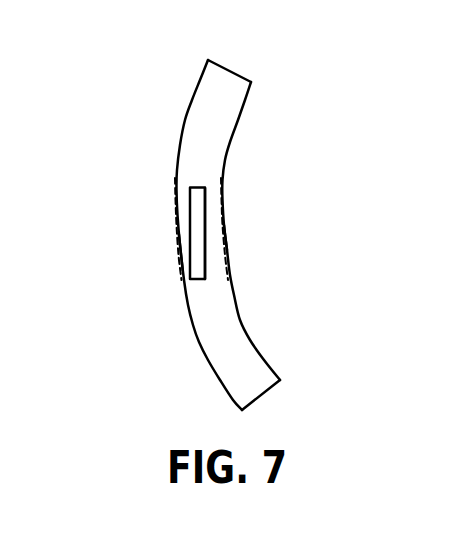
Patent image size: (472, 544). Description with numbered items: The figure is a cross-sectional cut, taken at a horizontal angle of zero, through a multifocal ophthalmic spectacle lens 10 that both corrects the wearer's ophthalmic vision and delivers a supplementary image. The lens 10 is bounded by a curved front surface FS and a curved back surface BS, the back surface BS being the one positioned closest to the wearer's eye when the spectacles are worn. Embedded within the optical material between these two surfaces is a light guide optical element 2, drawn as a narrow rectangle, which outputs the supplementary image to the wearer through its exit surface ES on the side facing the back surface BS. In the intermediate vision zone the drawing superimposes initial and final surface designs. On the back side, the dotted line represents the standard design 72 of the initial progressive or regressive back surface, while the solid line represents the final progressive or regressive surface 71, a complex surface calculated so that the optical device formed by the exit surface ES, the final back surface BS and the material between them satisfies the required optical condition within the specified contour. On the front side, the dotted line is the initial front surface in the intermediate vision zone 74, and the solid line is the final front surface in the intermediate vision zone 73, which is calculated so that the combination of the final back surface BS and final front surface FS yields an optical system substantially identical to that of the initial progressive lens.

The spectacle lens 10 is at (163, 66).
The front surface FS is at (180, 138).
The back surface BS is at (230, 139).
The exit surface ES is at (206, 209).
The light guide optical element 2 is at (200, 270).
The final progressive surface or regressive surface in the intermediate vision zone 71 is at (228, 240).
The standard design of the initial back surface 72 is at (225, 255).
The final front surface in the intermediate vision zone 73 is at (180, 247).
The initial front surface in the intermediate vision zone 74 is at (174, 222).